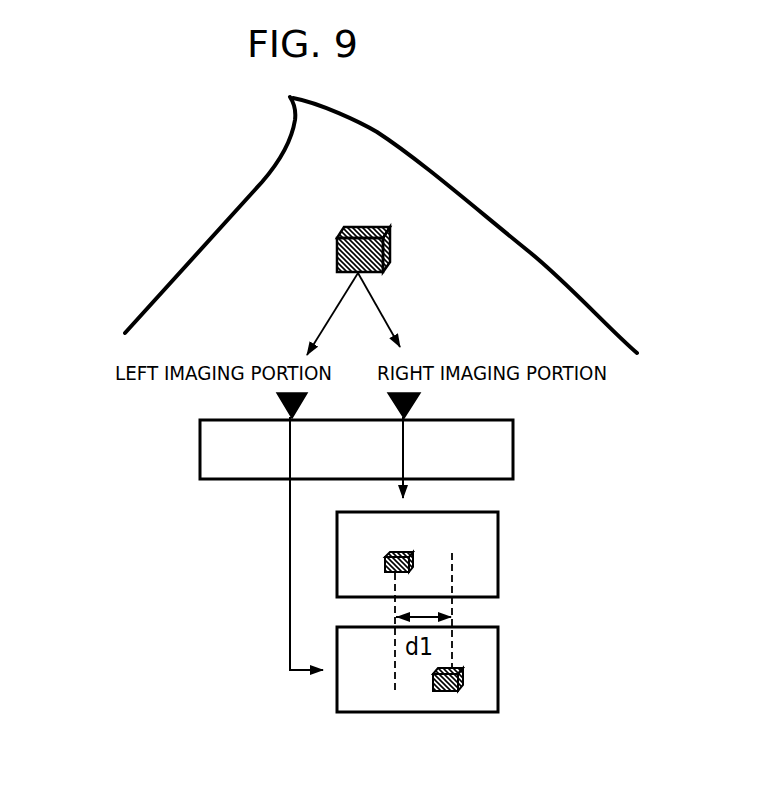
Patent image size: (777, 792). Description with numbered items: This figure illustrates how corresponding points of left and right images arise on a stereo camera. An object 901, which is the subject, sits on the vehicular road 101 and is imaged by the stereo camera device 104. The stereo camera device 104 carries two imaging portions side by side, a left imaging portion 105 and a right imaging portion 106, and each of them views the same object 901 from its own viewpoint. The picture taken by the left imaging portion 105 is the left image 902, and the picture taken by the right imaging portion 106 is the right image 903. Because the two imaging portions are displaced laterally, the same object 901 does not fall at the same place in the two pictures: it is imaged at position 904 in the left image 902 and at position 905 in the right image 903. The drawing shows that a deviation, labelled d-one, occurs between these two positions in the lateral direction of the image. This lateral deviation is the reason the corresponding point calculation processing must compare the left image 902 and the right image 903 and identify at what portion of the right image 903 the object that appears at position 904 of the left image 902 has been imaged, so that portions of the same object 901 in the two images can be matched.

The vehicular road 101 is at (377, 132).
The stereo camera device 104 is at (200, 448).
The left imaging portion 105 is at (282, 394).
The right imaging portion 106 is at (418, 400).
The object 901 is at (390, 245).
The left image 902 is at (498, 635).
The right image 903 is at (498, 521).
The position in the left image 904 is at (447, 691).
The position in the right image 905 is at (385, 560).